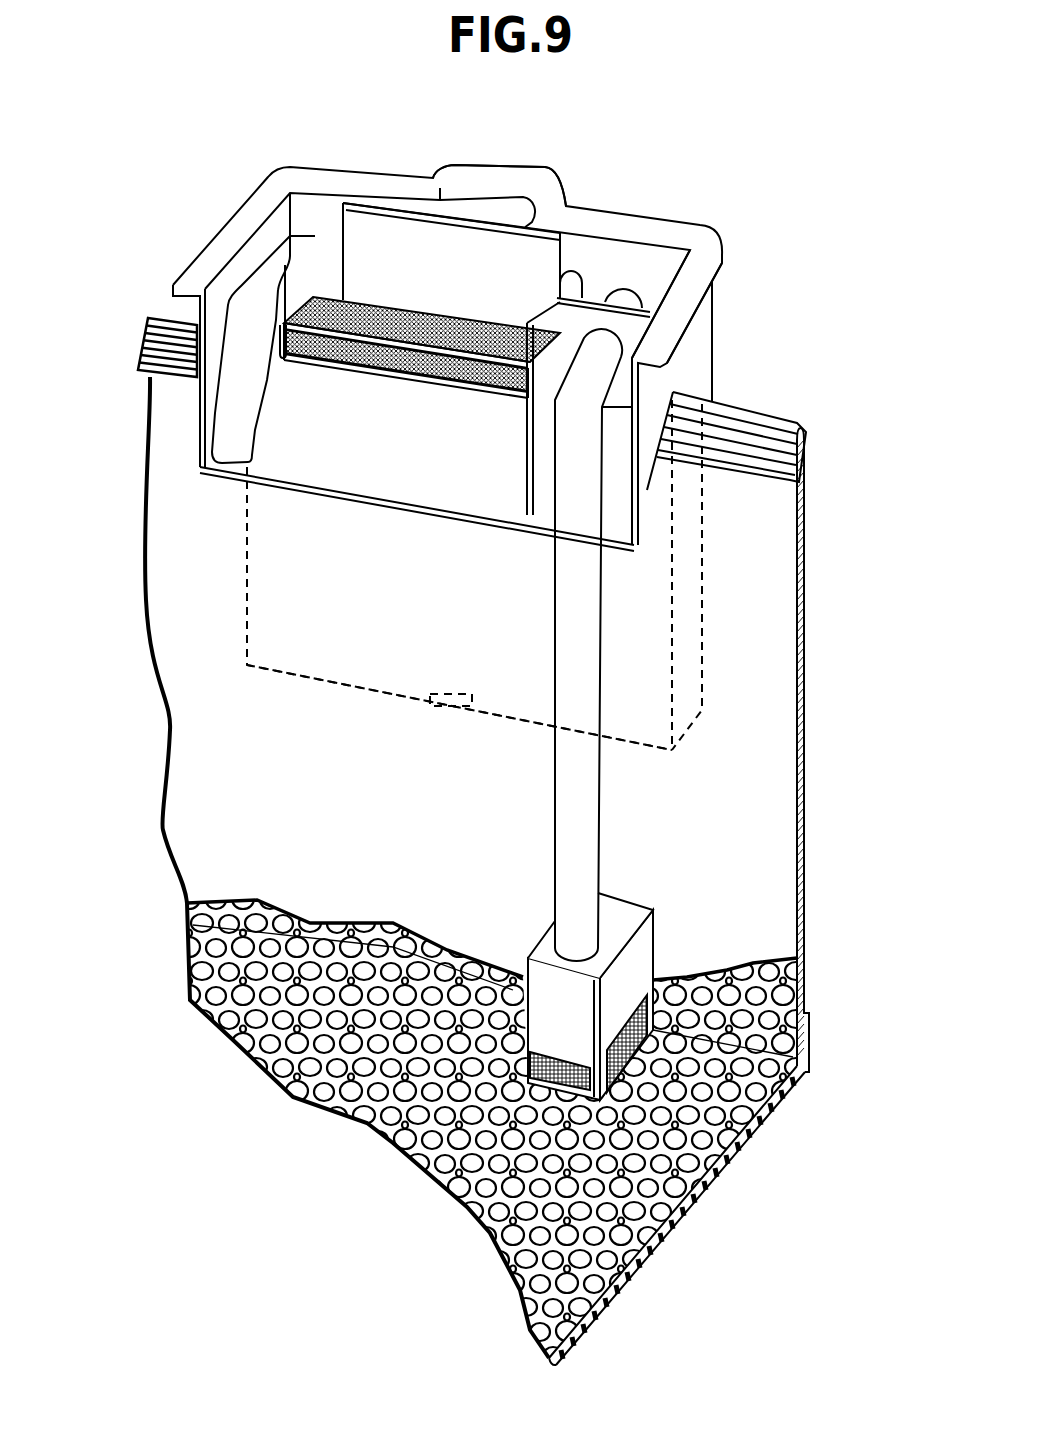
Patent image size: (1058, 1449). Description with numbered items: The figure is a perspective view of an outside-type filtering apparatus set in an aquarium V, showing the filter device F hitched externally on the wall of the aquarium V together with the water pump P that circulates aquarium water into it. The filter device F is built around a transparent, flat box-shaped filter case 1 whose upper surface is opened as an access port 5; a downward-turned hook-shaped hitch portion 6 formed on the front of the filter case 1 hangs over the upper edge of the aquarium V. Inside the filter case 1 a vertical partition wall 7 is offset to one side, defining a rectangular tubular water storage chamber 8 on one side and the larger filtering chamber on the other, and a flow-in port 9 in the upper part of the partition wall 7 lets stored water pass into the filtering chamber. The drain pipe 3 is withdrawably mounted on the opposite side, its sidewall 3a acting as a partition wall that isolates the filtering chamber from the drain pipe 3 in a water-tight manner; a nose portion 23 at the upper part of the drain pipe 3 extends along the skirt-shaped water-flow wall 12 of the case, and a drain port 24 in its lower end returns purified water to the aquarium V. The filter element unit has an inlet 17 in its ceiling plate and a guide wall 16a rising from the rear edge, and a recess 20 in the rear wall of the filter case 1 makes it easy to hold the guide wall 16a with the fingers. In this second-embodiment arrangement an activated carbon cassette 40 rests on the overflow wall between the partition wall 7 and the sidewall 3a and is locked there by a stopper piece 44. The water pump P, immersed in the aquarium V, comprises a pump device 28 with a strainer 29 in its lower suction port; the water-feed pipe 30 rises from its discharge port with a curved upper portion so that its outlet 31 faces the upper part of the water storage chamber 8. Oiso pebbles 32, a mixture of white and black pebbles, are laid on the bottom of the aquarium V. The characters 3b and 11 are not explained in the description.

The filter case 1 is at (705, 395).
The drain pipe 3 is at (262, 281).
The sidewall (partition wall) 3a is at (327, 273).
The hanger hook portion 3b is at (288, 255).
The access port 5 is at (583, 257).
The hitch portion 6 is at (650, 460).
The partition wall 7 is at (540, 407).
The water storage chamber 8 is at (667, 257).
The flow-in port 9 is at (577, 268).
The filter tank 11 is at (375, 618).
The water-flow wall 12 is at (412, 432).
The guide wall 16a is at (423, 230).
The inlet 17 is at (483, 325).
The recess 20 is at (493, 200).
The nose portion 23 is at (222, 430).
The drain port 24 is at (232, 468).
The pump device 28 is at (538, 950).
The strainer 29 is at (553, 1065).
The water-feed pipe 30 is at (555, 815).
The outlet 31 is at (623, 287).
The Oiso pebbles 32 is at (718, 1150).
The activated carbon cassette 40 is at (371, 375).
The stopper piece 44 is at (282, 360).
The filter device F is at (716, 333).
The water pump P is at (657, 950).
The aquarium V is at (810, 605).